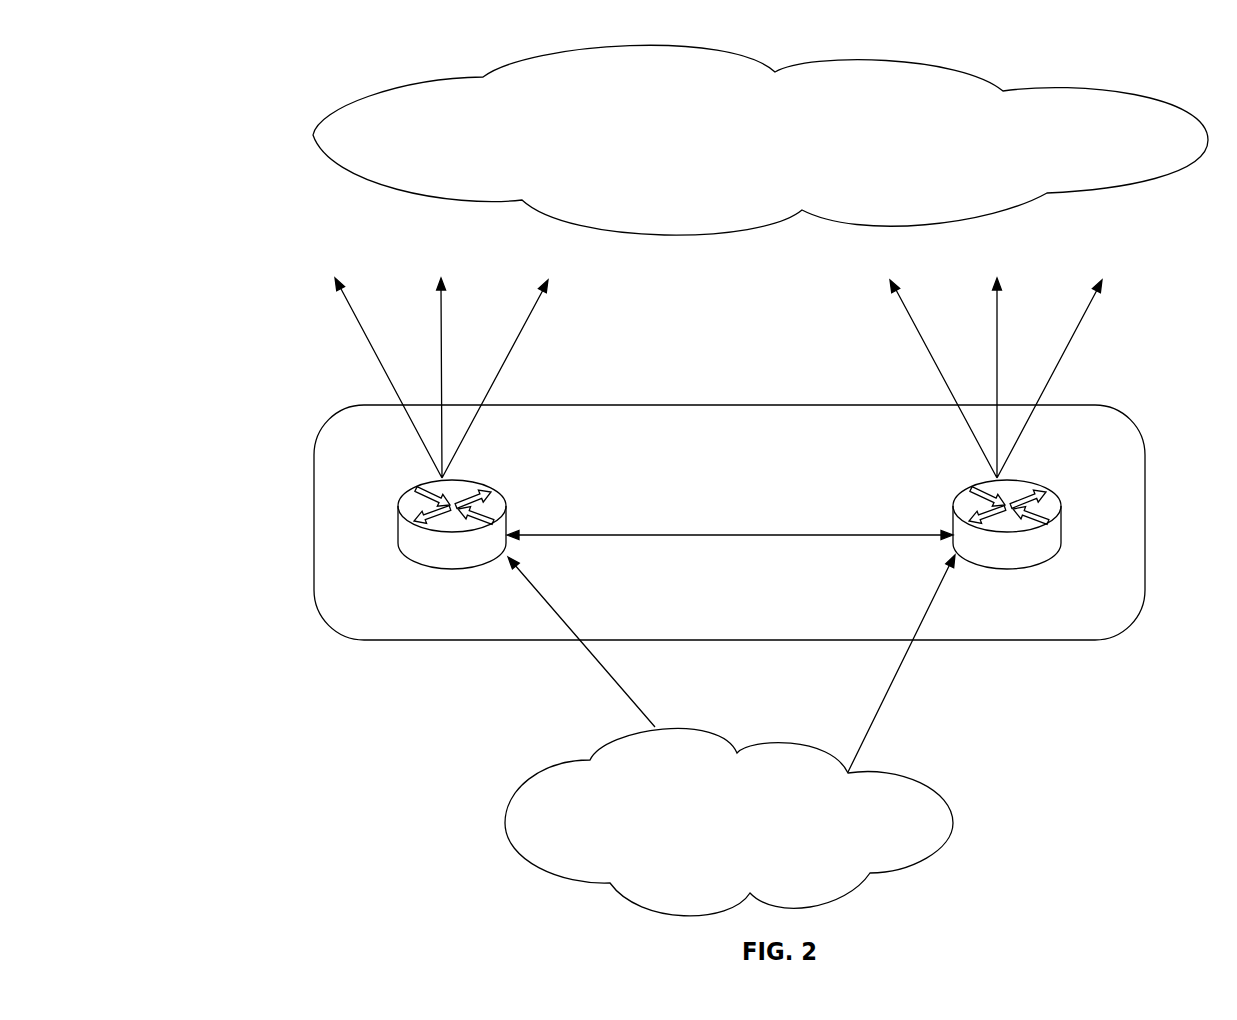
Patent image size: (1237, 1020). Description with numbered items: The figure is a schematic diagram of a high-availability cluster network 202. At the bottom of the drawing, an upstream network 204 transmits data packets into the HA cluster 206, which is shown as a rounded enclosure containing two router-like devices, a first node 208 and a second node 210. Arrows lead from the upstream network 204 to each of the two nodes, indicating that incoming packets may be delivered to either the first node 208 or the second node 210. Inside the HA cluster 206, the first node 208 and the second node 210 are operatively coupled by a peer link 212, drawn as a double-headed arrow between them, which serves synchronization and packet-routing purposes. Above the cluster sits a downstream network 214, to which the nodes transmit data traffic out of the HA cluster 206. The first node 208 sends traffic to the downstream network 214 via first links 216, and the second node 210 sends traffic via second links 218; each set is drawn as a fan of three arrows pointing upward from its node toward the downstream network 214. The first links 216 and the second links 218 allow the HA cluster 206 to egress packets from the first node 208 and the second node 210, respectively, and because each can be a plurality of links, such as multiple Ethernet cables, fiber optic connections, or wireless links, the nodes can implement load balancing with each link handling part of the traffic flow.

The HA cluster network 202 is at (248, 792).
The upstream network 204 is at (742, 837).
The HA cluster 206 is at (358, 384).
The first node 208 is at (468, 604).
The second node 210 is at (1022, 606).
The peer link 212 is at (725, 535).
The downstream network 214 is at (770, 156).
The first links 216 is at (505, 366).
The second links 218 is at (1060, 365).